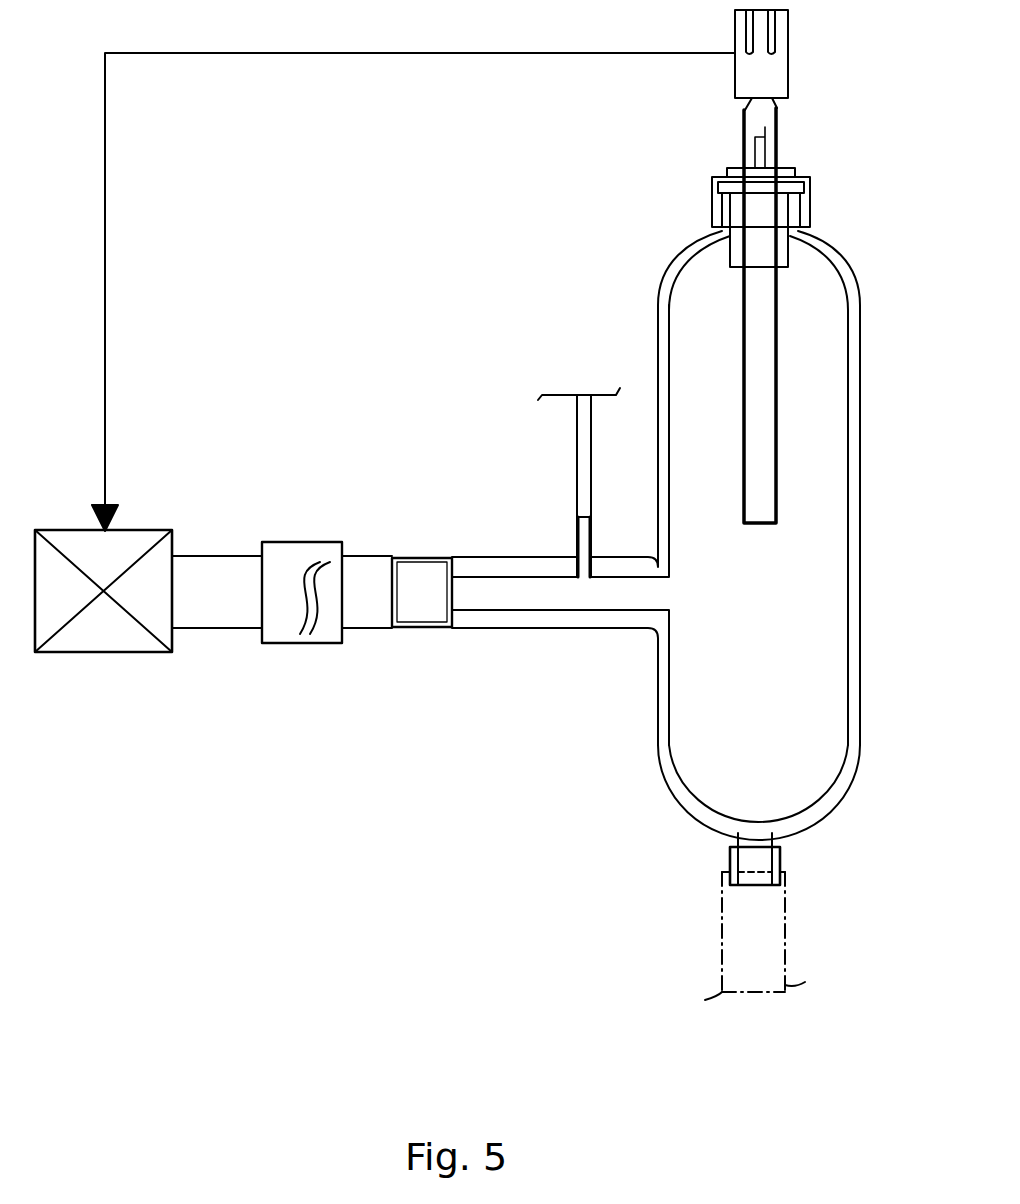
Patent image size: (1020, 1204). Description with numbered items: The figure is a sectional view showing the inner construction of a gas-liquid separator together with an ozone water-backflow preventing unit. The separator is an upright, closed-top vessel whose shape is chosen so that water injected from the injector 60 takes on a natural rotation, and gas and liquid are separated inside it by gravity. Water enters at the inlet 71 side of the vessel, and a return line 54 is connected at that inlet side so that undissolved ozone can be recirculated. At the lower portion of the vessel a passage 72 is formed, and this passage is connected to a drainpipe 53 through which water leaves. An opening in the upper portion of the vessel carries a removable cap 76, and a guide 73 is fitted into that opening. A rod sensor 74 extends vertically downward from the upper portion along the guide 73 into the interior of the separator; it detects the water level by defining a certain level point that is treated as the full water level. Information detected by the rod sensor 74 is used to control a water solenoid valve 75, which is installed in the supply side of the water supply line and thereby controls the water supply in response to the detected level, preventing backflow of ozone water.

The drainpipe 53 is at (775, 928).
The return line 54 is at (588, 435).
The injector 60 is at (292, 643).
The inlet 71 is at (423, 612).
The passage 72 is at (728, 848).
The guide 73 is at (790, 166).
The rod sensor 74 is at (777, 370).
The water solenoid valve 75 is at (95, 652).
The removable cap 76 is at (812, 204).